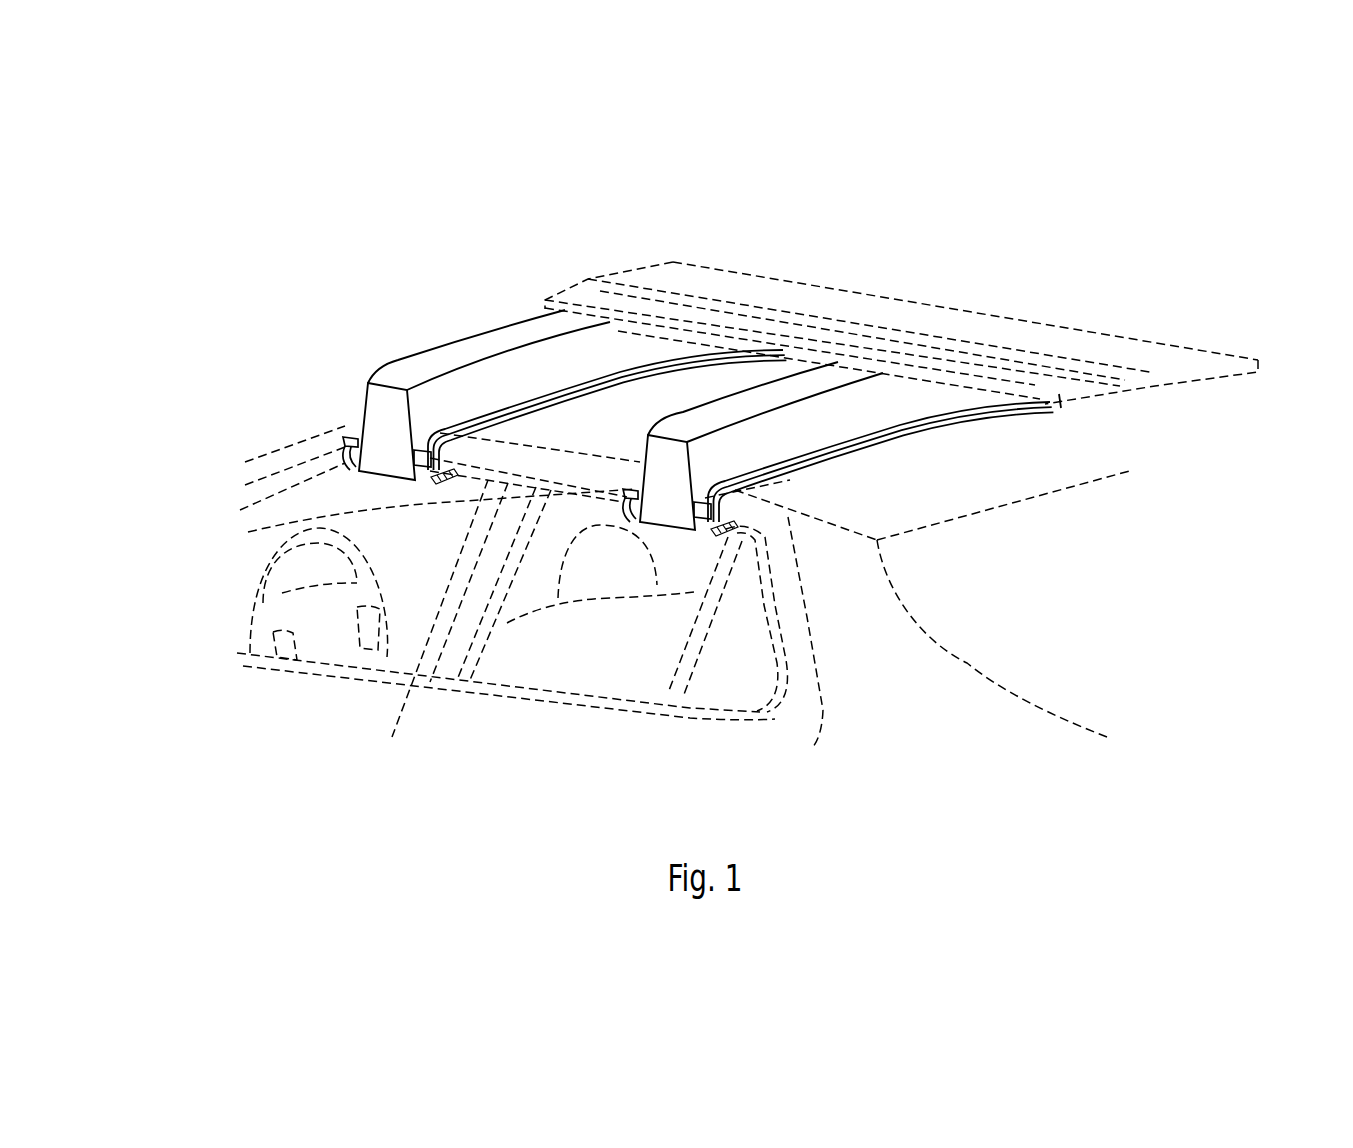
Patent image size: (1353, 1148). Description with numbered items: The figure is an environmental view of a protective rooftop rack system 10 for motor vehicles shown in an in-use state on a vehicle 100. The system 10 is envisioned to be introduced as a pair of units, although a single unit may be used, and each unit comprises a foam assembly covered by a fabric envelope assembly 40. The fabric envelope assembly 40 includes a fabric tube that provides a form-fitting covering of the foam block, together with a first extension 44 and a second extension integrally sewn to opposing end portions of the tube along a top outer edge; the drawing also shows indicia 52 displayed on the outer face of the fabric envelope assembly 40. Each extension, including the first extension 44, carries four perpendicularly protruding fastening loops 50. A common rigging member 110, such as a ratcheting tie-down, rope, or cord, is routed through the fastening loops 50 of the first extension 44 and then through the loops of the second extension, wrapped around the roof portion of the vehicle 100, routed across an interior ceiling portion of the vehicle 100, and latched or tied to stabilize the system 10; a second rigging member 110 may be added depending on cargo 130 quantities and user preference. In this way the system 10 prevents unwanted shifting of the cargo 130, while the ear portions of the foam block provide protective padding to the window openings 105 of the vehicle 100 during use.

The protective rooftop rack system 10 is at (440, 233).
The fabric envelope assembly 40 is at (479, 328).
The first extension 44 is at (373, 420).
The fastening loop 50 is at (420, 453).
The indicia 52 is at (606, 343).
The vehicle 100 is at (260, 513).
The window openings 105 is at (365, 675).
The rigging member 110 is at (500, 413).
The cargo 130 is at (1023, 383).